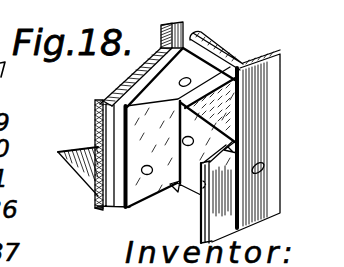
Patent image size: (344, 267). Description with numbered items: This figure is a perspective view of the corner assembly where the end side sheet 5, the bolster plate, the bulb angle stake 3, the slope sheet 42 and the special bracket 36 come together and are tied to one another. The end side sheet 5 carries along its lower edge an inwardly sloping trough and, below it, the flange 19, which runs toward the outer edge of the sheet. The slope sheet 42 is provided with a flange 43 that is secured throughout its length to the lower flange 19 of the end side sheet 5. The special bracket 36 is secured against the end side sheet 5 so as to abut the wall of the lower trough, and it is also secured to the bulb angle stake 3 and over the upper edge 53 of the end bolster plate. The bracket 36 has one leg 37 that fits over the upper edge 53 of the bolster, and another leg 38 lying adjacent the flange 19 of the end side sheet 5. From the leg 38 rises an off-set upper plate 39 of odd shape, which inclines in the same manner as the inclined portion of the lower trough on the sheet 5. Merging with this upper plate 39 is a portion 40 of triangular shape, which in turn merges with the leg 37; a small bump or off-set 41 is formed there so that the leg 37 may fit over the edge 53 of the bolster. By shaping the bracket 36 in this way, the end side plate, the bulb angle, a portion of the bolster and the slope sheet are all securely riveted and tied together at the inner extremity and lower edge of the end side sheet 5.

The end side sheet 5 is at (187, 27).
The side stake 3 is at (262, 95).
The off-set upper plate 39 is at (155, 100).
The triangular portion 40 is at (217, 114).
The bump or off-set 41 is at (236, 136).
The special bracket 36 is at (170, 188).
The leg 38 is at (97, 124).
The flange 43 is at (95, 143).
The slope sheet 42 is at (89, 172).
The flange 19 is at (100, 198).
The upper edge of the bolster plate 53 is at (199, 196).
The leg 37 is at (240, 183).